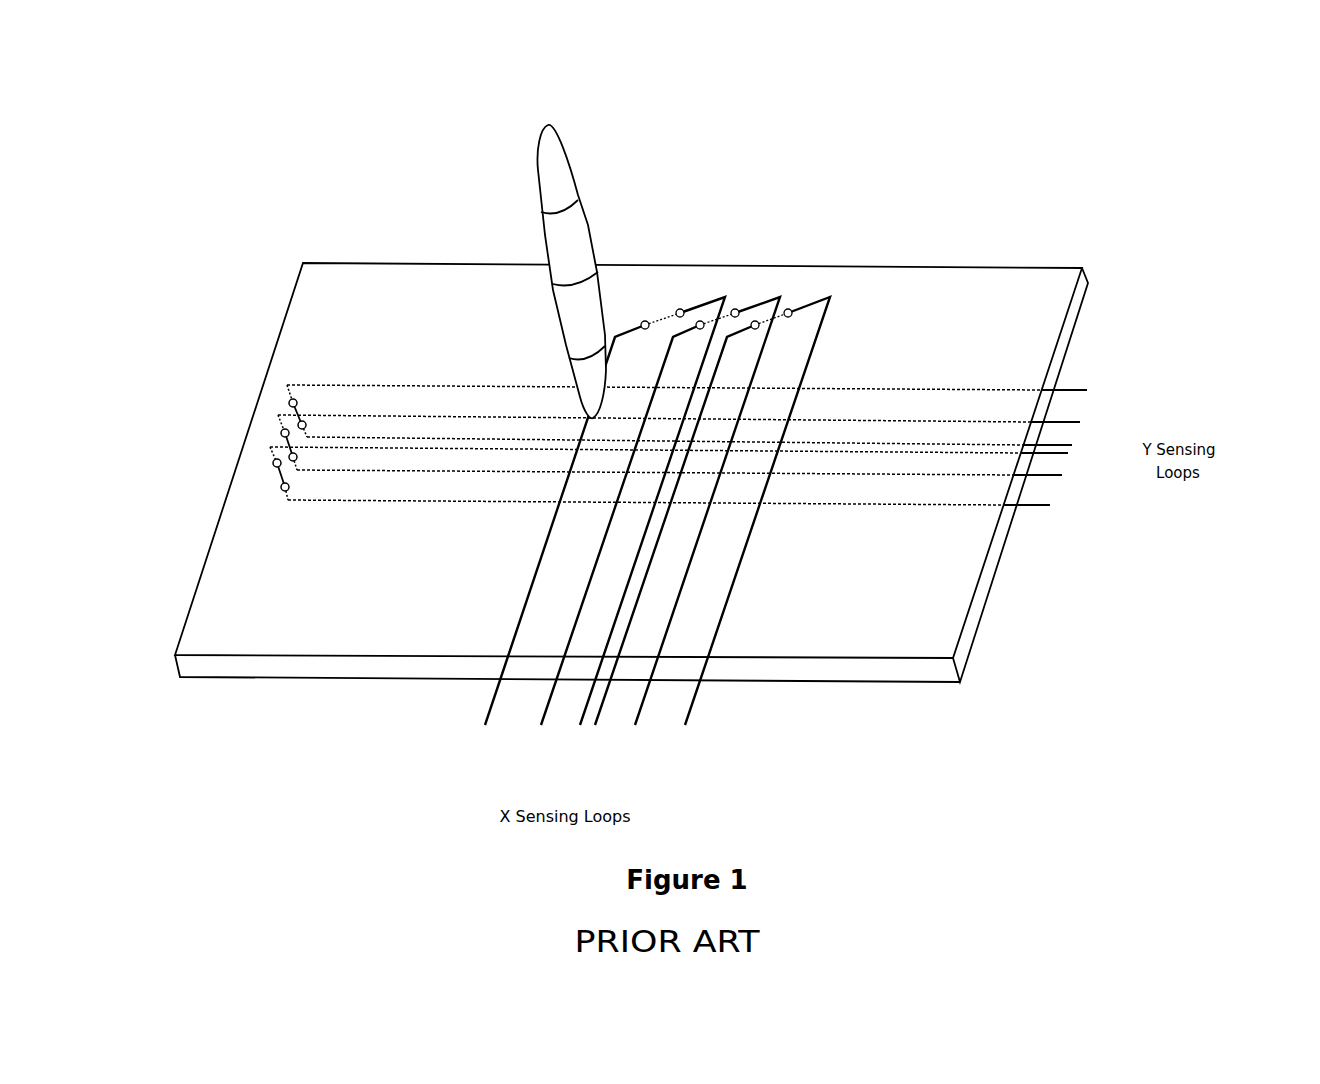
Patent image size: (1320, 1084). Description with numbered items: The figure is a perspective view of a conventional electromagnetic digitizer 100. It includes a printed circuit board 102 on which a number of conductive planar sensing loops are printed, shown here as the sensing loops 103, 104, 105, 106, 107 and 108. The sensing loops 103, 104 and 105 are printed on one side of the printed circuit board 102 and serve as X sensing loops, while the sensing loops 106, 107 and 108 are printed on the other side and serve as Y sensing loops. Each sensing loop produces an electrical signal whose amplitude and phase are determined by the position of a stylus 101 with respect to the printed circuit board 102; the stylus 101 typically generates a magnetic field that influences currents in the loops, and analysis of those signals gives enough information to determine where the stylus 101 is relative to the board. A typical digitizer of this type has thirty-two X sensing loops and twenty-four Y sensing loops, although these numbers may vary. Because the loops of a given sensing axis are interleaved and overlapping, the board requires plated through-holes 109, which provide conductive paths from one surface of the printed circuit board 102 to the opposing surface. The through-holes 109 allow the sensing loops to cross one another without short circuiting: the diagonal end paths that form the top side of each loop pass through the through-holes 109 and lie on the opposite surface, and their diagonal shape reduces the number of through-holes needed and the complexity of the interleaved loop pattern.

The electromagnetic digitizer 100 is at (1046, 143).
The stylus 101 is at (537, 158).
The printed circuit board 102 is at (878, 266).
The sensing loop 103 is at (490, 712).
The sensing loop 104 is at (545, 712).
The sensing loop 105 is at (688, 715).
The sensing loop 106 is at (1075, 390).
The sensing loop 107 is at (1066, 422).
The sensing loop 108 is at (1045, 507).
The through-holes 109 is at (707, 312).